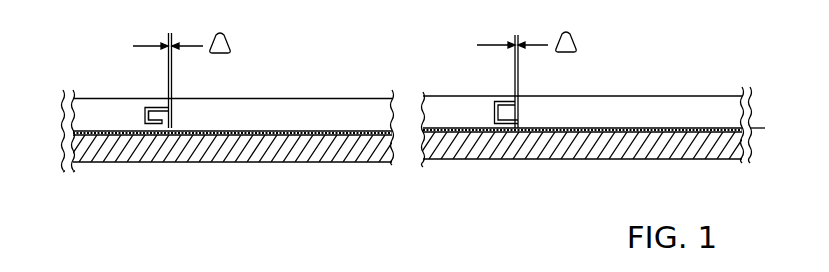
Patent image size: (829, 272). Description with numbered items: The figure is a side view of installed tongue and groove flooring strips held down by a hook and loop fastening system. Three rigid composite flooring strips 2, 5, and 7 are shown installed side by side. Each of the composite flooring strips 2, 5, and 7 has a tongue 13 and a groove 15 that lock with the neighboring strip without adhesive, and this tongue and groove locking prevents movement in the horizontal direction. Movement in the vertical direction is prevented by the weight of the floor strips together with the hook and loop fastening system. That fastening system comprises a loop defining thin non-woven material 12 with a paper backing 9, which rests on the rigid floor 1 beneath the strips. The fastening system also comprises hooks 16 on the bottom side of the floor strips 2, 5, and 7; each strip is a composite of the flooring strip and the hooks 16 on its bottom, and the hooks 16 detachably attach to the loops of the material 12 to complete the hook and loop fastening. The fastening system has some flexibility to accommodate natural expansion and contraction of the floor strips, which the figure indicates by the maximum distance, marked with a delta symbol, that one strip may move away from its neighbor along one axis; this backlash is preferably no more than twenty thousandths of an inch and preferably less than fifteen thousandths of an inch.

The rigid floor 1 is at (108, 155).
The composite flooring strip 2 is at (340, 102).
The composite flooring strip 5 is at (220, 105).
The composite flooring strip 7 is at (642, 112).
The paper backing 9 is at (122, 132).
The loop defining thin non-woven material 12 is at (644, 132).
The tongue 13 is at (165, 116).
The groove 15 is at (157, 123).
The hooks 16 is at (455, 133).